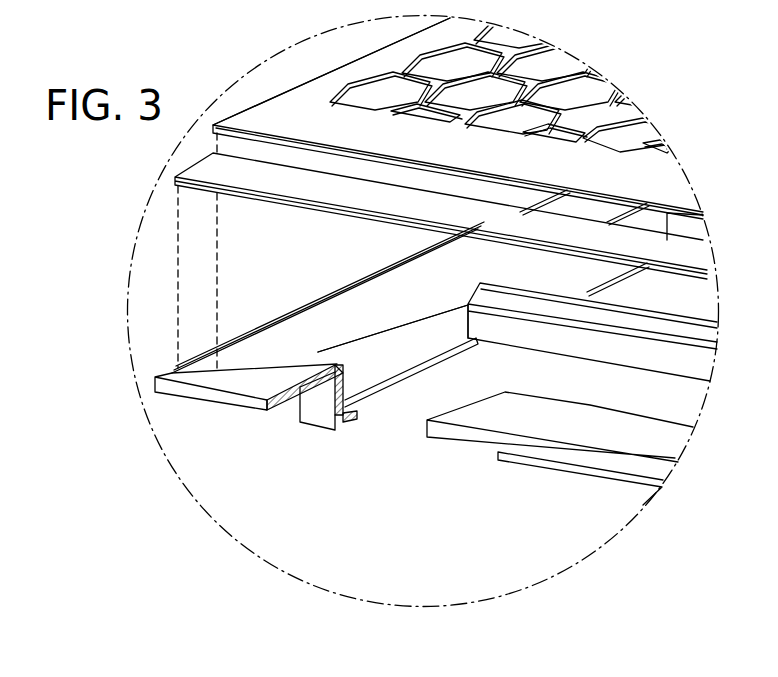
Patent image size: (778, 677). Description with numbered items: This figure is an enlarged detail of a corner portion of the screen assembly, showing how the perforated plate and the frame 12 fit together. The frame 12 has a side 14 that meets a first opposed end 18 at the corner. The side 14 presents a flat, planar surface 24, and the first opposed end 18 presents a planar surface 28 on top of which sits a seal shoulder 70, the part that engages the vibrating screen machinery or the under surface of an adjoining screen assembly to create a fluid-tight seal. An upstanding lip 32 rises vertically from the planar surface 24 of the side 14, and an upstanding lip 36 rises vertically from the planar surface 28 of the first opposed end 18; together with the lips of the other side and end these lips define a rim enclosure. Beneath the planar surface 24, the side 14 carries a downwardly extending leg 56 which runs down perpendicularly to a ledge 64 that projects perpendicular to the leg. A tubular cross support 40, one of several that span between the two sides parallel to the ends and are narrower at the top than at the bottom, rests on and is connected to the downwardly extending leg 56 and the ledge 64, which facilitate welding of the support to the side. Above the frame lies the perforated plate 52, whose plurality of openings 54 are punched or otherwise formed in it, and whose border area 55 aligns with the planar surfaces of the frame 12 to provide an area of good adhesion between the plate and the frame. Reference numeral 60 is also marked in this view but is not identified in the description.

The frame 12 is at (362, 497).
The side 14 is at (396, 190).
The first opposed end 18 is at (558, 480).
The planar surface 24 is at (410, 312).
The planar surface 28 is at (543, 422).
The upstanding lip 32 is at (350, 284).
The upstanding lip 36 is at (228, 385).
The tubular cross support 40 is at (558, 329).
The perforated plate 52 is at (293, 103).
The openings 54 is at (530, 110).
The border area 55 is at (385, 56).
The downwardly extending leg 56 is at (368, 347).
The shelf rail 60 is at (569, 466).
The ledge 64 is at (413, 370).
The seal shoulder 70 is at (194, 166).